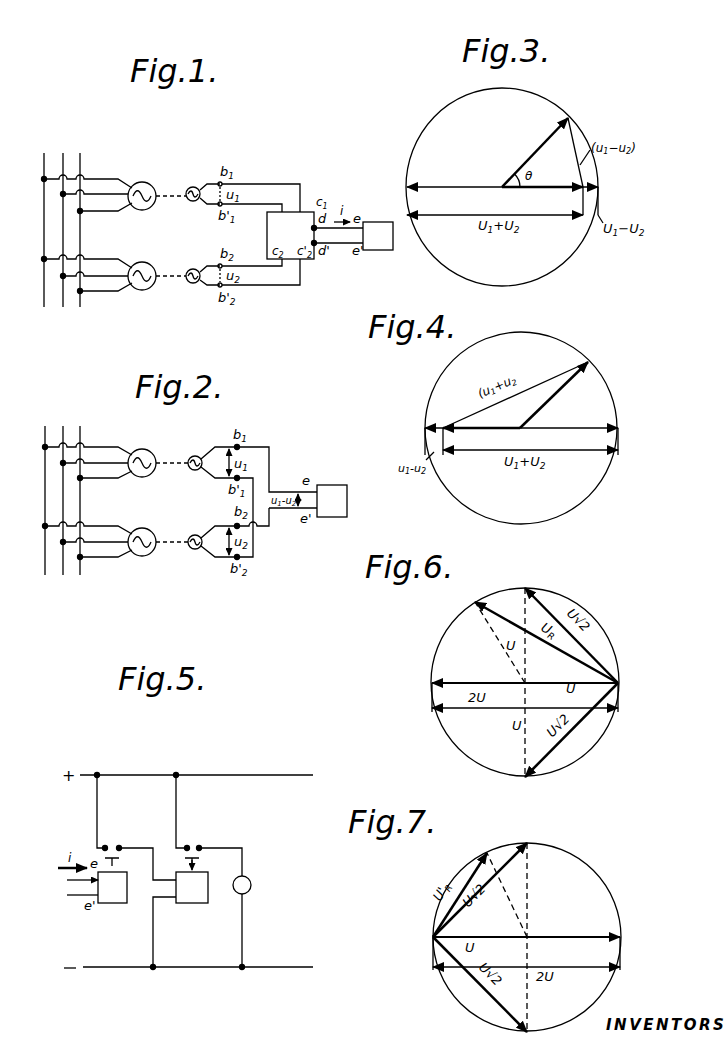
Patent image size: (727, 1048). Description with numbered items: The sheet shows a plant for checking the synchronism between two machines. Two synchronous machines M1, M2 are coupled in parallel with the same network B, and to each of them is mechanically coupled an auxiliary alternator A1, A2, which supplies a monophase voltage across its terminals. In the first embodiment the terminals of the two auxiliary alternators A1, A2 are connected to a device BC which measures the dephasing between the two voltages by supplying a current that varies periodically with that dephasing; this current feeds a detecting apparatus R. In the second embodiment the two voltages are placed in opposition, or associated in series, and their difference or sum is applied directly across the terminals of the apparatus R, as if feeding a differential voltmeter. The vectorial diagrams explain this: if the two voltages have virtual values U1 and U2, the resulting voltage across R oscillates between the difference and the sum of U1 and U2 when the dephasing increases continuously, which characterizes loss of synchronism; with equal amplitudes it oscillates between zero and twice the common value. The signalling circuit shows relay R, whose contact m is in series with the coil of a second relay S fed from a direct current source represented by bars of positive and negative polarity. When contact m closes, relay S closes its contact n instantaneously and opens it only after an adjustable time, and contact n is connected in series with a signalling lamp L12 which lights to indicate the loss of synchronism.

In FIG. 1, the network B is at (62, 220).
In FIG. 2, the network B is at (62, 488).
In FIG. 1, the synchronous machine M1 is at (99, 187).
In FIG. 2, the synchronous machine M1 is at (100, 455).
In FIG. 1, the synchronous machine M2 is at (99, 268).
In FIG. 2, the synchronous machine M2 is at (100, 533).
In FIG. 1, the auxiliary alternator A1 is at (189, 185).
In FIG. 2, the auxiliary alternator A1 is at (196, 455).
In FIG. 1, the auxiliary alternator A2 is at (189, 267).
In FIG. 2, the auxiliary alternator A2 is at (196, 534).
In FIG. 1, the dephasing measuring device BC is at (290, 235).
In FIG. 1, the relay R is at (378, 236).
In FIG. 2, the relay R is at (332, 501).
In FIG. 5, the relay R is at (112, 887).
In FIG. 5, the relay S is at (192, 887).
In FIG. 5, the signalling lamp L12 is at (253, 885).
In FIG. 5, the contact m is at (119, 858).
In FIG. 5, the contact n is at (198, 859).
In FIG. 3, the virtual value of voltage u1 U1 is at (535, 152).
In FIG. 4, the virtual value of voltage u1 U1 is at (554, 395).
In FIG. 3, the virtual value of voltage u2 U2 is at (542, 198).
In FIG. 4, the virtual value of voltage u2 U2 is at (481, 437).